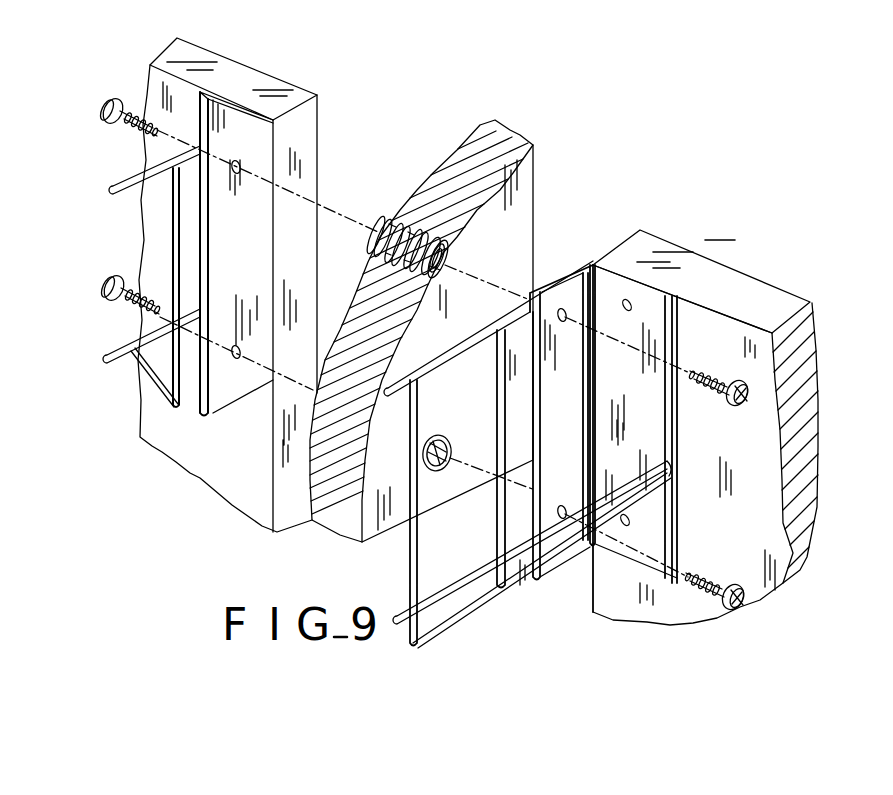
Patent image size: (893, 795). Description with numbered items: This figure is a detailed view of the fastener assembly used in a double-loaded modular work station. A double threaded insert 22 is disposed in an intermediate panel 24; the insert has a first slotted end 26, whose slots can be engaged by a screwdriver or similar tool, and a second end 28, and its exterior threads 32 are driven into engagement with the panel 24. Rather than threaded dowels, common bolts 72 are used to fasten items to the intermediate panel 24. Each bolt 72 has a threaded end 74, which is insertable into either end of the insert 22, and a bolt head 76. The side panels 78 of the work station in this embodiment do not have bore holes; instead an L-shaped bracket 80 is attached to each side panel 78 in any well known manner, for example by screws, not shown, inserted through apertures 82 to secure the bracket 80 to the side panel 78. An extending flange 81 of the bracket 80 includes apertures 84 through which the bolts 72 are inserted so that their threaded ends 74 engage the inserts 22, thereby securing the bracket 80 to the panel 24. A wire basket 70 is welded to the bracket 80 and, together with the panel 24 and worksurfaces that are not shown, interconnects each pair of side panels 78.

The double threaded insert 22 is at (419, 342).
The intermediate panel 24 is at (492, 141).
The first slotted end 26 is at (446, 255).
The second end 28 is at (376, 226).
The exterior threads 32 is at (398, 262).
The wire basket 70 is at (127, 365).
The bolt 72 is at (416, 337).
The threaded end 74 is at (124, 128).
The bolt head 76 is at (108, 102).
The side panel 78 is at (222, 62).
The L-shaped bracket 80 is at (472, 370).
The extending flange 81 is at (227, 302).
The aperture 82 is at (621, 298).
The aperture 84 is at (240, 163).